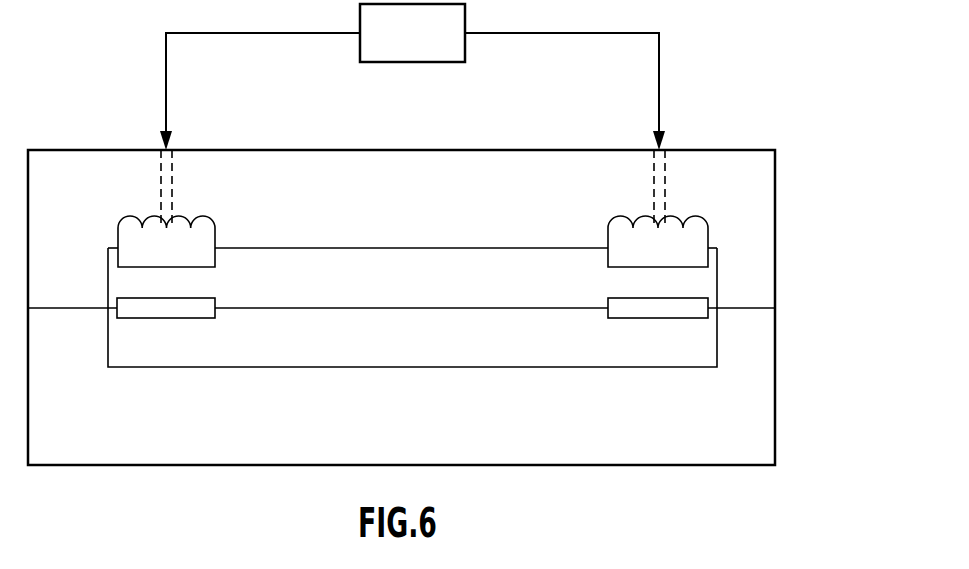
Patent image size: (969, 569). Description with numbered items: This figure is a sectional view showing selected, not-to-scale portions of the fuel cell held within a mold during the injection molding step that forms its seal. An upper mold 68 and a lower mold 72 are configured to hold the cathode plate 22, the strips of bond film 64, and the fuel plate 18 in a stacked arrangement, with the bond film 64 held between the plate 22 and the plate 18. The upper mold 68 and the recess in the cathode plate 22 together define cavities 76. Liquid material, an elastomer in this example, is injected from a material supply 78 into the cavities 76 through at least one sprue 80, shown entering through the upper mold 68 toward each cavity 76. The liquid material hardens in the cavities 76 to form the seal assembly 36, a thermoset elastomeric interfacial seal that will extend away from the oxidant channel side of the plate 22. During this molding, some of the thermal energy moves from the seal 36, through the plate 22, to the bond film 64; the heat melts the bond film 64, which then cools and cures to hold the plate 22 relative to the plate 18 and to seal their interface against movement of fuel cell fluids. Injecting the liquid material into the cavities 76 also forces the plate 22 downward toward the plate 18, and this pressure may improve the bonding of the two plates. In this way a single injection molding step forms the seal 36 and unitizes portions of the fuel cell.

The material supply 78 is at (427, 45).
The sprue 80 is at (160, 171).
The seal assembly 36 is at (126, 233).
The cavities 76 is at (113, 246).
The cathode plate 22 is at (119, 281).
The bond film 64 is at (127, 309).
The fuel plate 18 is at (118, 357).
The upper mold 68 is at (760, 218).
The lower mold 72 is at (760, 394).